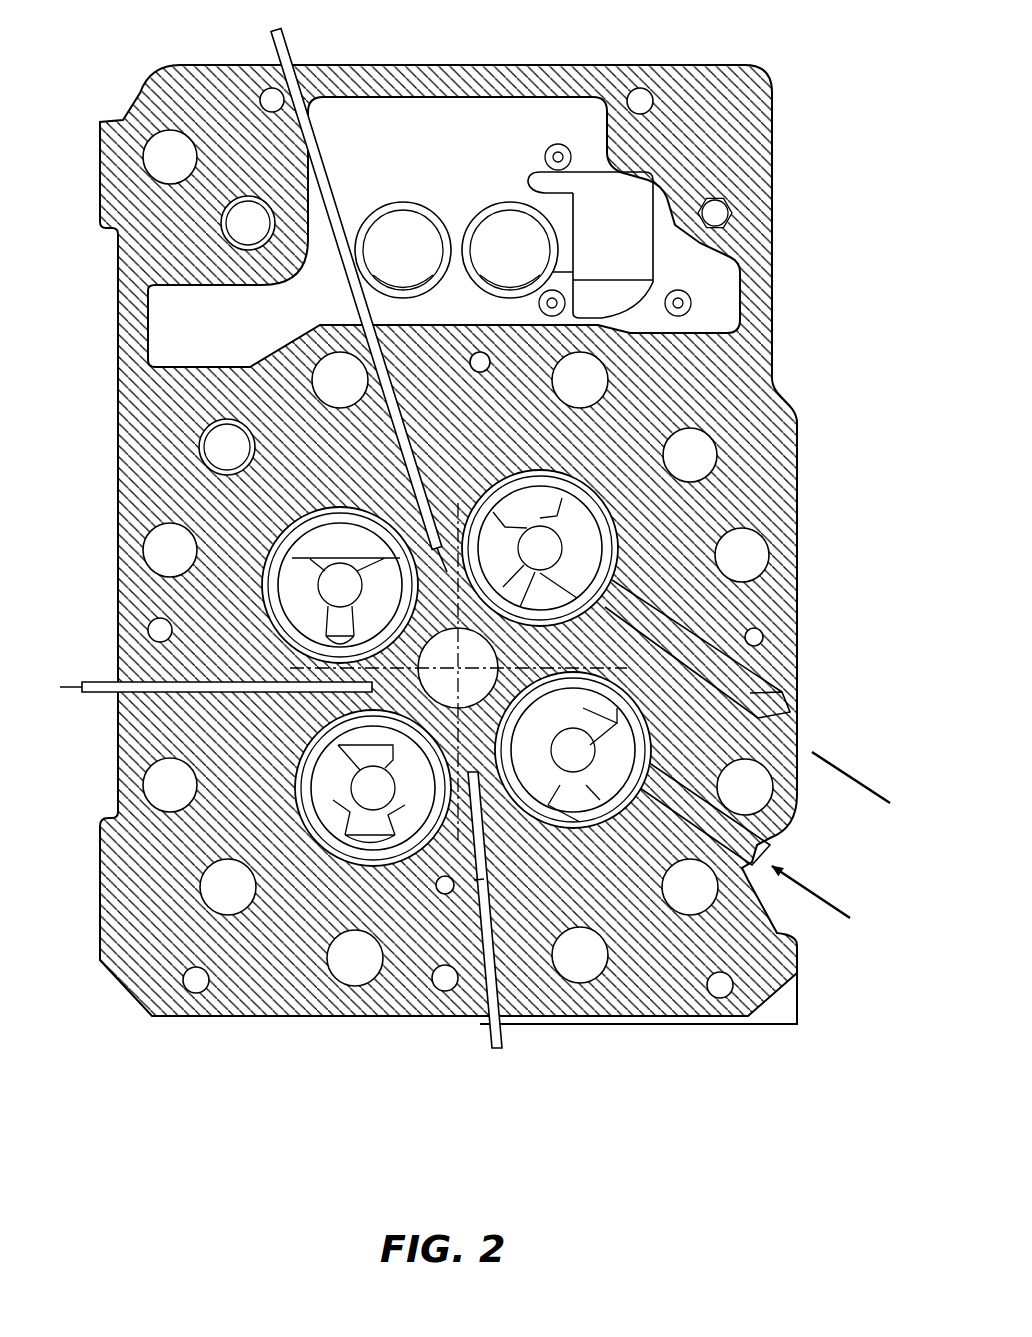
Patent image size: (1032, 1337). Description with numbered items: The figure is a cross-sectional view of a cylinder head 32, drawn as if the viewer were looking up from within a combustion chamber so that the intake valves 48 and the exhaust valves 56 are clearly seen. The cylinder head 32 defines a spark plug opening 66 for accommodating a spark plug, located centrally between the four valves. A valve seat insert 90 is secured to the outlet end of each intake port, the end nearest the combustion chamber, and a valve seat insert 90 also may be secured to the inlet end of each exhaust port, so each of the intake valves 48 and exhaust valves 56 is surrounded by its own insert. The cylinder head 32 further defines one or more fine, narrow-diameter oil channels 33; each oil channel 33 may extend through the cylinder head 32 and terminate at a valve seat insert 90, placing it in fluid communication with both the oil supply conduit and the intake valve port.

The cylinder head 32 is at (515, 65).
The oil channel 33 is at (683, 783).
The intake valve 48 is at (583, 522).
The exhaust valve 56 is at (297, 605).
The spark plug opening 66 is at (432, 680).
The valve seat insert 90 is at (282, 540).